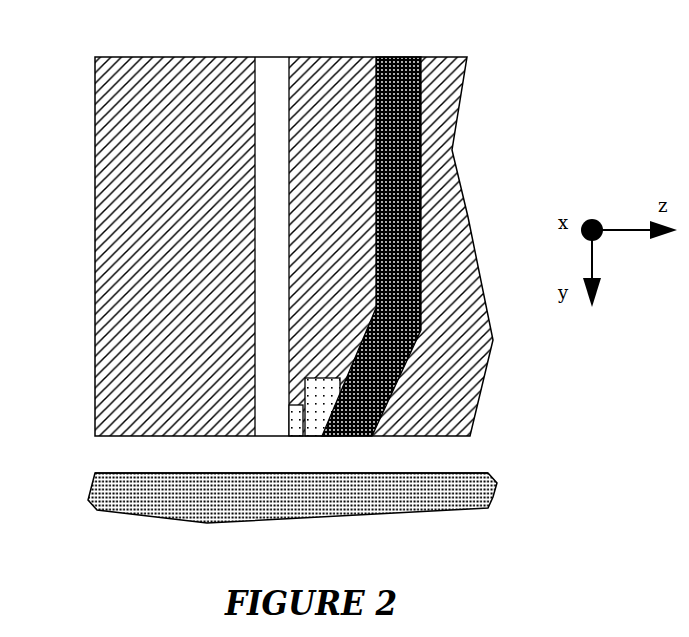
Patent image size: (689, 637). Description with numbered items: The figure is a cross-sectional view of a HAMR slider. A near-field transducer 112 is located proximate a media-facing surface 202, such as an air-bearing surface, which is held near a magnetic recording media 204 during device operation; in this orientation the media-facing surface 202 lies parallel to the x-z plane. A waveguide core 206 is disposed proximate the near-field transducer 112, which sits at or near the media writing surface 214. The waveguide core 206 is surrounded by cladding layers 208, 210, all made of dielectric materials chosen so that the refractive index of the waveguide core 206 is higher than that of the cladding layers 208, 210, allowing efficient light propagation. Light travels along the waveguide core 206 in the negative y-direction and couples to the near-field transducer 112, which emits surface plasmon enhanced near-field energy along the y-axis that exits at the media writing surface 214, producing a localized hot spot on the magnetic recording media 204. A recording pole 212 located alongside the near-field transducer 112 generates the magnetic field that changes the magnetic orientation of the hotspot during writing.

The media-facing surface 202 is at (122, 437).
The magnetic recording media 204 is at (482, 483).
The waveguide core 206 is at (279, 222).
The cladding layer 208 is at (102, 97).
The cladding layer 210 is at (325, 57).
The recording pole 212 is at (395, 57).
The media writing surface 214 is at (440, 473).
The near-field transducer 112 is at (298, 437).